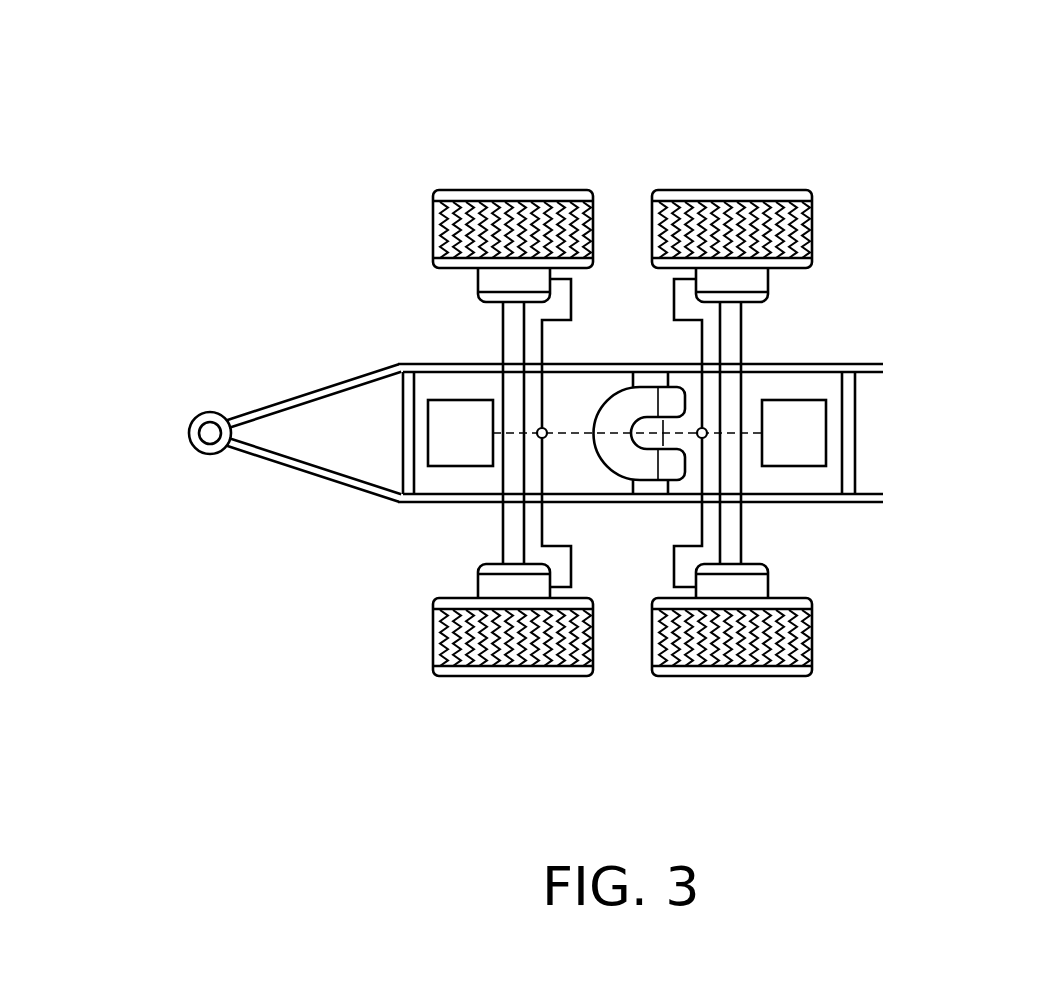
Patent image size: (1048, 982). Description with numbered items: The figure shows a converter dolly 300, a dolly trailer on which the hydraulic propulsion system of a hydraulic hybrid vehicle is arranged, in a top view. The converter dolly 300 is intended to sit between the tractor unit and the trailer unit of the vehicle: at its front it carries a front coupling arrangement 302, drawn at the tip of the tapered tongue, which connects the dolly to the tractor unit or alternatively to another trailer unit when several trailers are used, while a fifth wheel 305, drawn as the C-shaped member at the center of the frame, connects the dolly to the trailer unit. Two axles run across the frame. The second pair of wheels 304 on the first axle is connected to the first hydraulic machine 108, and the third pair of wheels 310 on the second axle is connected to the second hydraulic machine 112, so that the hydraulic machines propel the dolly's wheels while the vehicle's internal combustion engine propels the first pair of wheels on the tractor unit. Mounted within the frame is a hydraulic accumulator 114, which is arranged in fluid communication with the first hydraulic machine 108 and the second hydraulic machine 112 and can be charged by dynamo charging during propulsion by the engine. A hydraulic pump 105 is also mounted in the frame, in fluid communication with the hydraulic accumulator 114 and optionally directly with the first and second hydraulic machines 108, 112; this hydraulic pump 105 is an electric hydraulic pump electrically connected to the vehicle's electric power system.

The converter dolly 300 is at (362, 88).
The front coupling arrangement 302 is at (205, 449).
The second pair of wheels 304 is at (515, 215).
The fifth wheel 305 is at (625, 427).
The third pair of wheels 310 is at (720, 215).
The first hydraulic machine 108 is at (492, 287).
The second hydraulic machine 112 is at (757, 283).
The hydraulic accumulator 114 is at (447, 434).
The hydraulic pump 105 is at (793, 433).